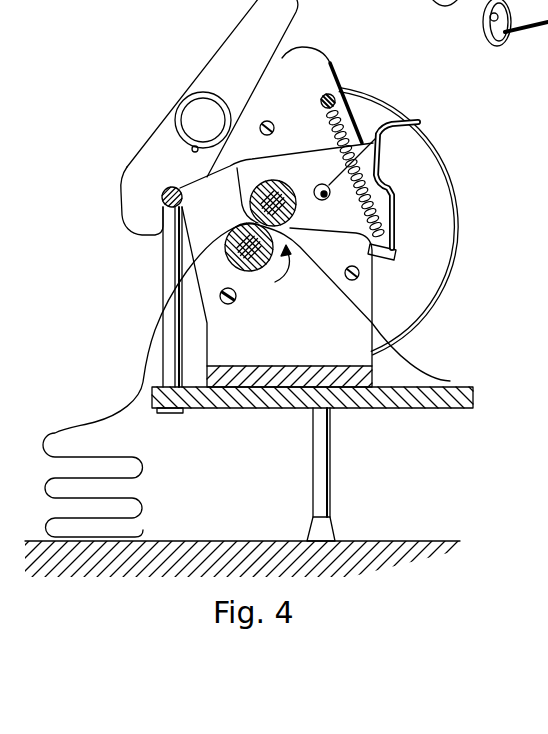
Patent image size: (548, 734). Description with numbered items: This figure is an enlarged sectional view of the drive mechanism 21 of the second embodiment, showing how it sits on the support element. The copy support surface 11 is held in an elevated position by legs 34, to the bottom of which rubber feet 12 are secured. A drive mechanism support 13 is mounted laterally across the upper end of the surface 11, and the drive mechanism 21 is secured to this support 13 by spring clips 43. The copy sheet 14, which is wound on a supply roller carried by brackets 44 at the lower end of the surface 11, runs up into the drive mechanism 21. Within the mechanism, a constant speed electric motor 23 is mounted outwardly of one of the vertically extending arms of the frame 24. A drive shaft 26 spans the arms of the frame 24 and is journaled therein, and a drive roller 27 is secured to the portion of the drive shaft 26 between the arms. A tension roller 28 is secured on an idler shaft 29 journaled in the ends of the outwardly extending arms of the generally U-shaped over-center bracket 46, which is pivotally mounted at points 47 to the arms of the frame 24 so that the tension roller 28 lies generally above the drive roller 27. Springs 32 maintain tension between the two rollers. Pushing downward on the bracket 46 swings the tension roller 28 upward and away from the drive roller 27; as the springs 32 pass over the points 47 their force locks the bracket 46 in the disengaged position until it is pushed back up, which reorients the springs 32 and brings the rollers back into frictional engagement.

The drive mechanism 21 is at (188, 46).
The spring clips 43 is at (140, 152).
The drive mechanism support 13 is at (170, 263).
The tension roller 28 is at (254, 197).
The idler shaft 29 is at (252, 215).
The drive shaft 26 is at (237, 268).
The drive roller 27 is at (262, 268).
The springs 32 is at (348, 124).
The constant speed electric motor 23 is at (463, 223).
The pivot points 47 is at (367, 138).
The over-center bracket 46 is at (380, 176).
The copy sheet 14 is at (440, 378).
The copy support surface 11 is at (470, 393).
The frame 24 is at (300, 348).
The legs 34 is at (330, 458).
The rubber feet 12 is at (328, 522).
The brackets 44 is at (483, 14).